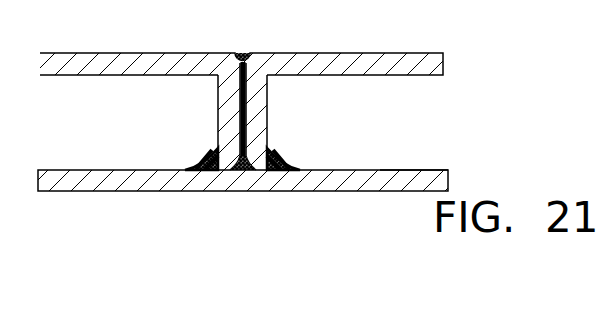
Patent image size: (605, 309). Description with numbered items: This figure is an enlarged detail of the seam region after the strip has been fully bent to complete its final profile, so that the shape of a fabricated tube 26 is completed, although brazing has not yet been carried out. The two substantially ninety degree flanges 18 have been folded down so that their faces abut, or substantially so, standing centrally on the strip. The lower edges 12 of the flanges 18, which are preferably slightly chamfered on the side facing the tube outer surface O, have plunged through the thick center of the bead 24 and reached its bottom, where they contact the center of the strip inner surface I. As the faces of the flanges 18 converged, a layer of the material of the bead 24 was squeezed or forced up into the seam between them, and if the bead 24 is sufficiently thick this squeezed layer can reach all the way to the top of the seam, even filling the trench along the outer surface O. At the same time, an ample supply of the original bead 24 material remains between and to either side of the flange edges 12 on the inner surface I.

The outer surface O is at (403, 53).
The interior surface I is at (92, 170).
The flanges 18 is at (218, 103).
The bead 24 is at (283, 158).
The edges 12 is at (197, 163).
The fabricated tube 26 is at (448, 170).